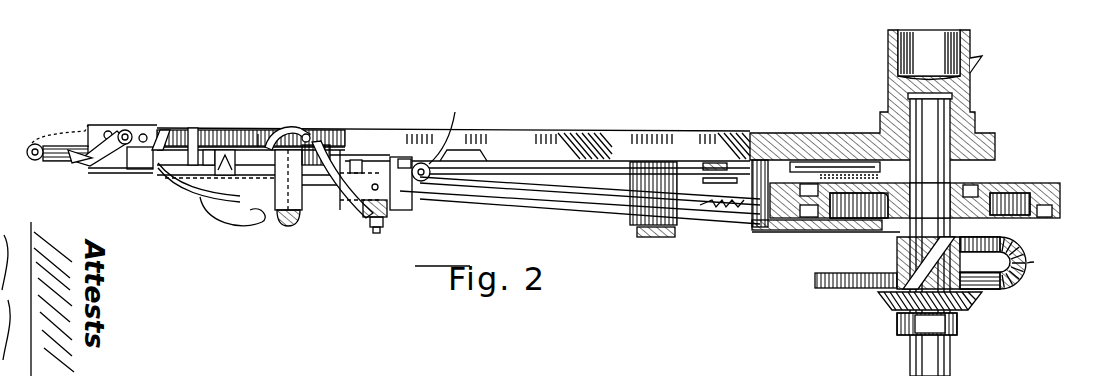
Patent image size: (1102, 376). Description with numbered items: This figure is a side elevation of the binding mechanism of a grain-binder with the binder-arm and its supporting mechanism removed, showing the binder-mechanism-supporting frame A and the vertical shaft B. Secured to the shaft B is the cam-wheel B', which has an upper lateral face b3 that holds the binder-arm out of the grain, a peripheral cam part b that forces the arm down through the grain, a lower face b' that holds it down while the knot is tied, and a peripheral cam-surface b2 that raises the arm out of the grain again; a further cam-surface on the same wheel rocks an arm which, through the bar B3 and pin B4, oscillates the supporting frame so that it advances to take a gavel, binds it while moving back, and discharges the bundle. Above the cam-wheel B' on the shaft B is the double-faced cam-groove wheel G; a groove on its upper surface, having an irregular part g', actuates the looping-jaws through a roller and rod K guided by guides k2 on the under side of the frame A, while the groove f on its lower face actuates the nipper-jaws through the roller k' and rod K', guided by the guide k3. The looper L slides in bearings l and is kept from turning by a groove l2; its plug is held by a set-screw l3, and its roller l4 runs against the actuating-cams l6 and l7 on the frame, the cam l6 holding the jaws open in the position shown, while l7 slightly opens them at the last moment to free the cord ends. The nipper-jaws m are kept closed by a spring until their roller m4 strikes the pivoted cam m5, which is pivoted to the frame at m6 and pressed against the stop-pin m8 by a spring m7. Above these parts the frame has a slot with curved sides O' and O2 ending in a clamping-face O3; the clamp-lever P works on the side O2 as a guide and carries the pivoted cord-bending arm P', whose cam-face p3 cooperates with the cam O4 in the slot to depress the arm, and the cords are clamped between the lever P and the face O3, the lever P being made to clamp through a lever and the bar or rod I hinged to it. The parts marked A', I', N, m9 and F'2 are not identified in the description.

The binder-mechanism-supporting frame A is at (453, 143).
The socket of frame A' is at (872, 95).
The vertical shaft B is at (930, 234).
The cam-wheel B' is at (945, 263).
The peripheral cam-surface b is at (929, 263).
The lower lateral face b' is at (856, 268).
The peripheral cam-surface b2 is at (1041, 274).
The upper lateral face b3 is at (1014, 231).
The bar B3 is at (678, 236).
The pin B4 is at (637, 206).
The bevel gear F'2 is at (935, 313).
The cam-groove f is at (1047, 218).
The double-faced cam-groove wheel G is at (924, 200).
The irregular part of cam-groove g' is at (991, 178).
The bar or rod I is at (401, 192).
The rod I' is at (580, 193).
The rod K is at (590, 190).
The rod K' is at (590, 190).
The roller k' is at (785, 193).
The guides k2 is at (844, 190).
The guide k3 is at (801, 232).
The looper L is at (284, 185).
The bearings l is at (286, 172).
The groove l2 is at (318, 203).
The set-screw l3 is at (379, 192).
The roller l4 is at (428, 161).
The actuating-cam l6 is at (445, 130).
The cam part l7 is at (486, 159).
The nipper-jaws m is at (98, 168).
The roller m4 is at (28, 148).
The pivoted cam m5 is at (76, 166).
The pivot m6 is at (127, 129).
The spring m7 is at (140, 151).
The stop-pin m8 is at (122, 136).
The guide m9 is at (60, 131).
The spring N is at (230, 220).
The curved side of slot O' is at (166, 129).
The curved side of slot O2 is at (233, 144).
The clamping-face O3 is at (220, 135).
The cam O4 is at (196, 130).
The clamp-lever P is at (349, 197).
The cord-bending arm P' is at (287, 126).
The cam-face p3 is at (266, 131).